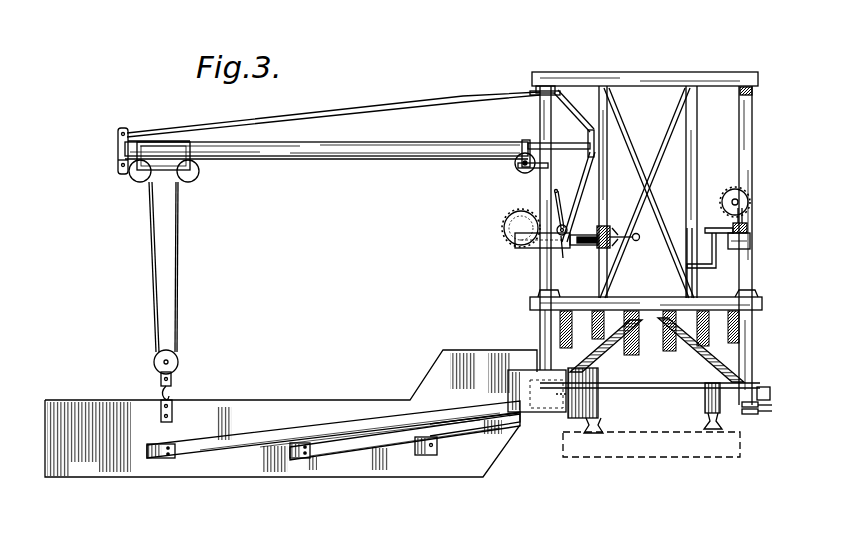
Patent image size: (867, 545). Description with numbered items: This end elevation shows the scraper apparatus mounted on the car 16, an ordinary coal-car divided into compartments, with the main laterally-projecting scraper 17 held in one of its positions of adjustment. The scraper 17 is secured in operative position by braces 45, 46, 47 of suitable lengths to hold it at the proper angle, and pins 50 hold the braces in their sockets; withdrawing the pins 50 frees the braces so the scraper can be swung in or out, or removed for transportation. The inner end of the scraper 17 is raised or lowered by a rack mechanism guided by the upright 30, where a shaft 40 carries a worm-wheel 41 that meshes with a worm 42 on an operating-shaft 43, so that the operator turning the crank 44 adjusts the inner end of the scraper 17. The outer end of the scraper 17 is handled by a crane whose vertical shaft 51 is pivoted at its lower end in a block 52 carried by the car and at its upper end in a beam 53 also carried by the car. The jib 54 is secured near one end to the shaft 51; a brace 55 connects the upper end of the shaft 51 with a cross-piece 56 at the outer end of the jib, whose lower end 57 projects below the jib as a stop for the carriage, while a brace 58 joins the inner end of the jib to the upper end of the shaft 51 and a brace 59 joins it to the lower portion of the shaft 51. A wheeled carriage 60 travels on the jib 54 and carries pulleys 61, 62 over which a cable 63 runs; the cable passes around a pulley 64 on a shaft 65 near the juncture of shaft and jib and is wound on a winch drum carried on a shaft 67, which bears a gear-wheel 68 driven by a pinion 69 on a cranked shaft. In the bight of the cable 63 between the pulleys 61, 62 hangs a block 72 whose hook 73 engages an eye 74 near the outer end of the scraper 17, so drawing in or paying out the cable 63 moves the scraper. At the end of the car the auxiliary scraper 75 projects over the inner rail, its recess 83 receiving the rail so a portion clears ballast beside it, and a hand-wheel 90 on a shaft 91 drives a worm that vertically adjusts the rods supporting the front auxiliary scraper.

The car 16 is at (763, 304).
The scraper 17 is at (203, 466).
The upright 30 is at (752, 163).
The shaft 40 is at (742, 202).
The worm-wheel 41 is at (745, 212).
The worm 42 is at (749, 229).
The operating-shaft 43 is at (710, 251).
The crank 44 is at (690, 236).
The brace 45 is at (458, 445).
The brace 46 is at (349, 448).
The brace 47 is at (269, 438).
The pin 50 is at (155, 460).
The vertical shaft of crane 51 is at (585, 136).
The block 52 is at (556, 296).
The beam 53 is at (645, 66).
The jib 54 is at (356, 150).
The brace 55 is at (321, 120).
The cross-piece 56 is at (116, 138).
The lower end of cross-piece 57 is at (116, 160).
The brace 58 is at (576, 112).
The brace 59 is at (590, 160).
The wheeled carriage 60 is at (192, 143).
The pulley 61 is at (130, 177).
The pulley 62 is at (198, 178).
The cable 63 is at (345, 160).
The pulley 64 is at (515, 166).
The shaft 65 is at (519, 170).
The shaft 67 is at (503, 226).
The gear-wheel 68 is at (510, 242).
The pinion 69 is at (556, 217).
The block 72 is at (180, 356).
The hook 73 is at (172, 381).
The eye 74 is at (172, 398).
The auxiliary scraper 75 is at (548, 413).
The recess 83 is at (598, 413).
The hand-wheel 90 is at (614, 230).
The shaft 91 is at (597, 248).